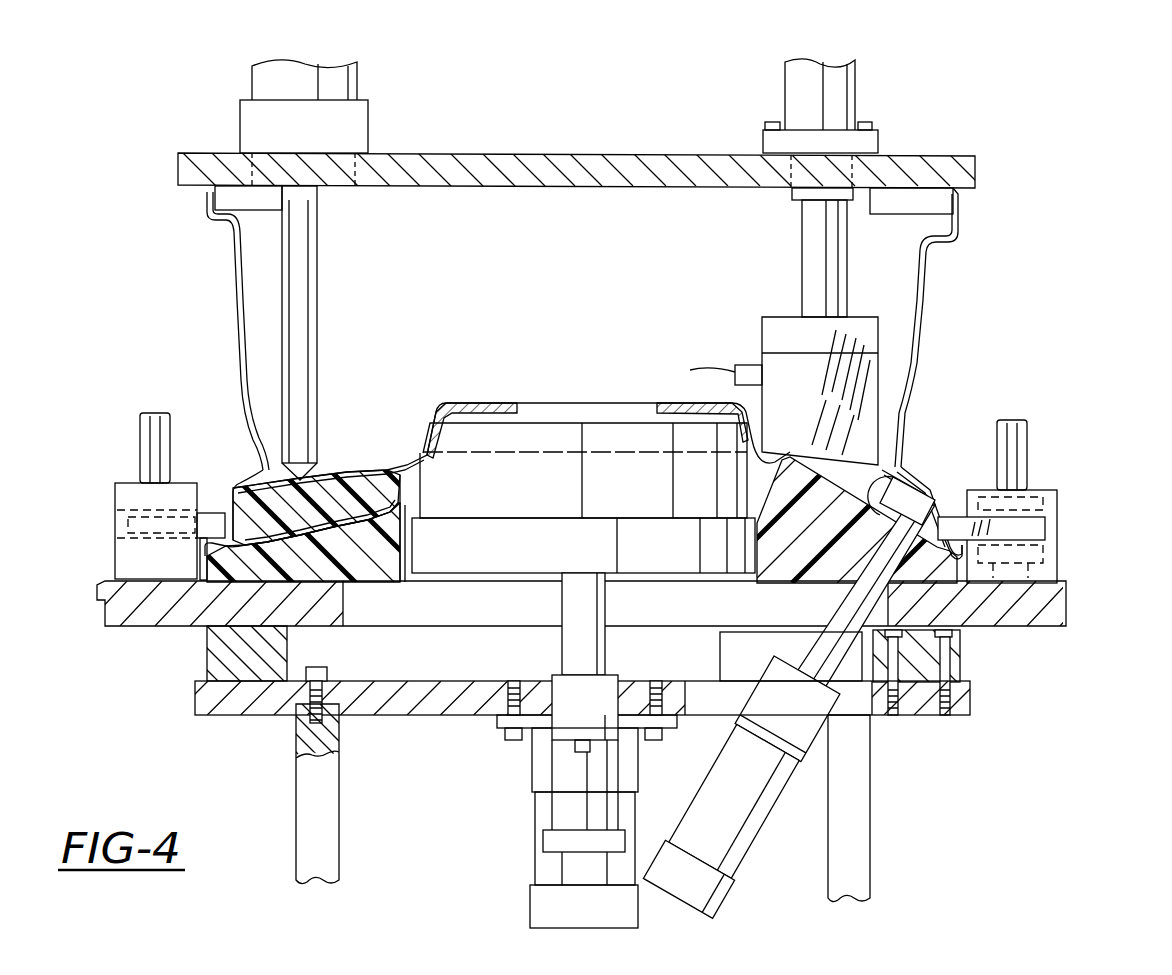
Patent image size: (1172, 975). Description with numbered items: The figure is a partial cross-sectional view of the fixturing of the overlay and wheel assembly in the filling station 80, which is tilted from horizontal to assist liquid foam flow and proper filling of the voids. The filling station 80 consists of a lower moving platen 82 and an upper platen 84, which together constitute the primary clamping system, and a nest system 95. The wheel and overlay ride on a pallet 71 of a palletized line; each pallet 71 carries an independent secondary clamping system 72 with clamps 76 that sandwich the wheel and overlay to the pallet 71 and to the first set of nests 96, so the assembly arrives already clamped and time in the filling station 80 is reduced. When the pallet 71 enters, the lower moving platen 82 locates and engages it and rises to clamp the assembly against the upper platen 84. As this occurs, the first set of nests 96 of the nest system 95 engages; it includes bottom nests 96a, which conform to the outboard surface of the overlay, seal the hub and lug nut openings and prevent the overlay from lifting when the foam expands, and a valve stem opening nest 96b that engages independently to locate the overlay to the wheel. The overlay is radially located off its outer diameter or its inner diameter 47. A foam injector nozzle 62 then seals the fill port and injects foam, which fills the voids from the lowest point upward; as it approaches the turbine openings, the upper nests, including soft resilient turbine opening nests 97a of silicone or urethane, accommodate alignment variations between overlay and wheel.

The filling station 80 is at (108, 298).
The upper platen 84 is at (978, 178).
The foam injector nozzle 62 is at (320, 352).
The nest system 95 is at (480, 345).
The turbine opening nests 97a is at (422, 440).
The first set of nests 96 is at (934, 468).
The bottom nests 96a is at (420, 500).
The valve stem opening nest 96b is at (950, 588).
The inner diameter 47 is at (930, 500).
The secondary clamping system 72 is at (1098, 443).
The clamps 76 is at (1057, 565).
The pallet 71 is at (1080, 598).
The lower moving platen 82 is at (195, 698).